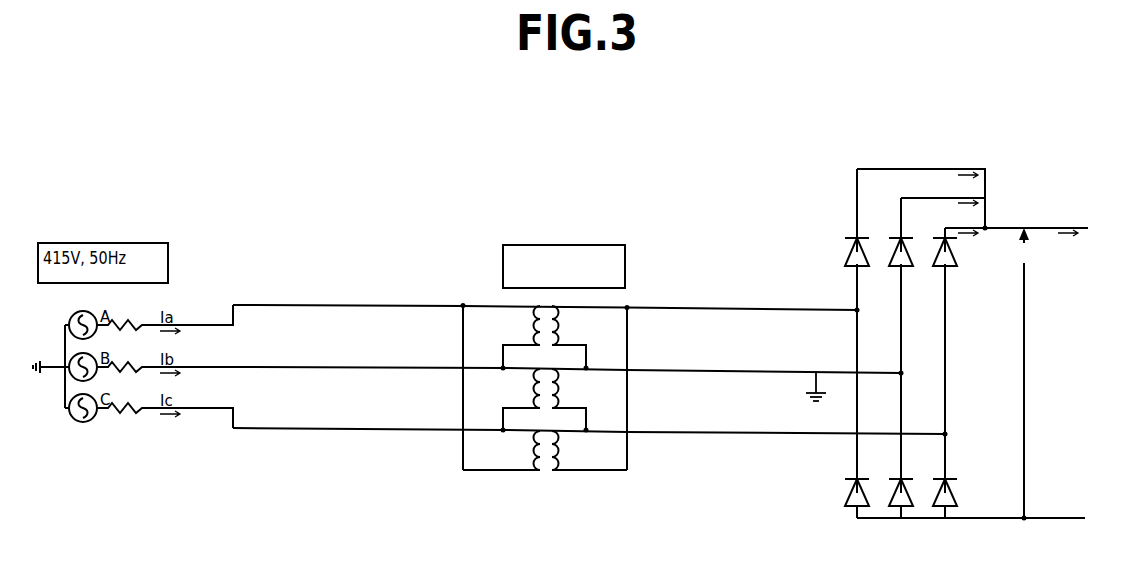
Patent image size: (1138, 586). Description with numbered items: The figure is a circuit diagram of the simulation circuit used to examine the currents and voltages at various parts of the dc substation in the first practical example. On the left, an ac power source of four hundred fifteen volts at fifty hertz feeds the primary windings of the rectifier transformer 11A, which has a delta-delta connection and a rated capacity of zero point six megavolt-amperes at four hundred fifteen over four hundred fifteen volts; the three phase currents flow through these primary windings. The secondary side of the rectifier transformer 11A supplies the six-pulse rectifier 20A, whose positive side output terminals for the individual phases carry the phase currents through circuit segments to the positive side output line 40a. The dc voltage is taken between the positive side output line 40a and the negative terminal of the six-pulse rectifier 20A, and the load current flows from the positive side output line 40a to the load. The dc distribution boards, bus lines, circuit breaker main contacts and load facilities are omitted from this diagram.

The rectifier transformer 11A is at (456, 288).
The six-pulse rectifier 20A is at (826, 286).
The positive side output line 40a is at (998, 228).